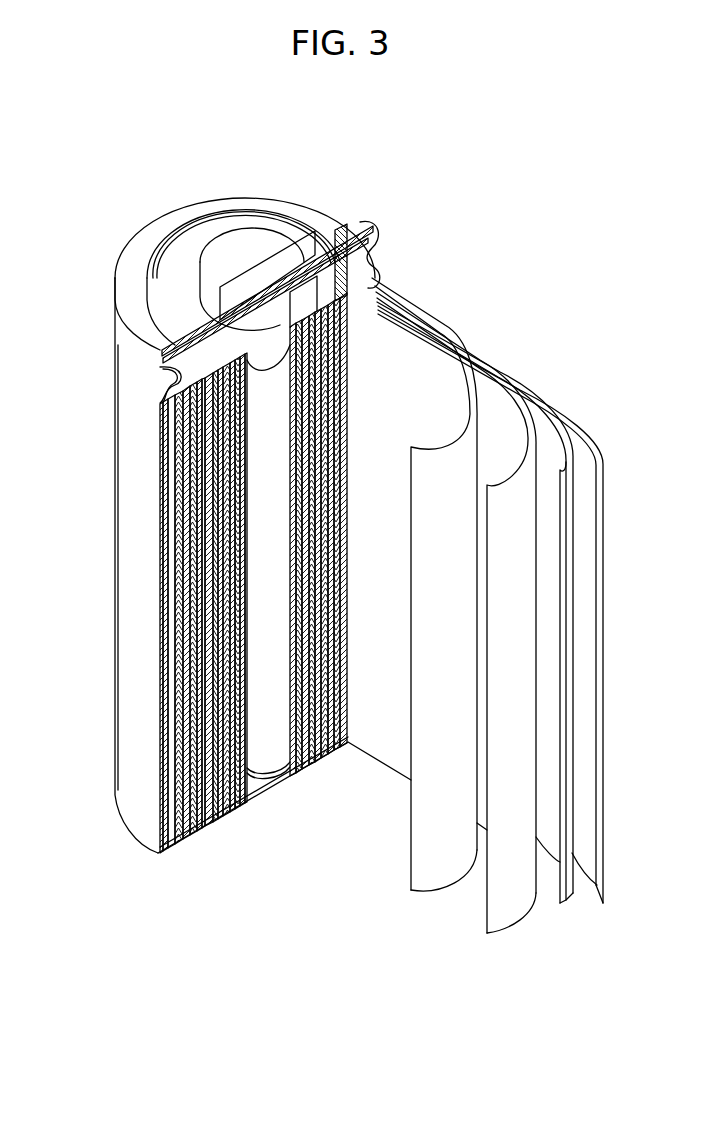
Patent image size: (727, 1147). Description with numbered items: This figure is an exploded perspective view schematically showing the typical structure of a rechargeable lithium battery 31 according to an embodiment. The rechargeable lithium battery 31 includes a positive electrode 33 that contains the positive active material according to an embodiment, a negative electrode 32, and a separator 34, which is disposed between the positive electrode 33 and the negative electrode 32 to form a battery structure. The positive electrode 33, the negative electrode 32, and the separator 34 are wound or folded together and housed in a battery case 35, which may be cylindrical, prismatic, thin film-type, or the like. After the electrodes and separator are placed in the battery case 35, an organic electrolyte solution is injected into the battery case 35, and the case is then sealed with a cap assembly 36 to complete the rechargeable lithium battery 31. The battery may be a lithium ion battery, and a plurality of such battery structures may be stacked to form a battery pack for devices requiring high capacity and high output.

The rechargeable lithium battery 31 is at (464, 201).
The negative electrode 32 is at (590, 418).
The positive electrode 33 is at (500, 383).
The separator 34 is at (450, 352).
The battery case 35 is at (127, 546).
The cap assembly 36 is at (237, 240).